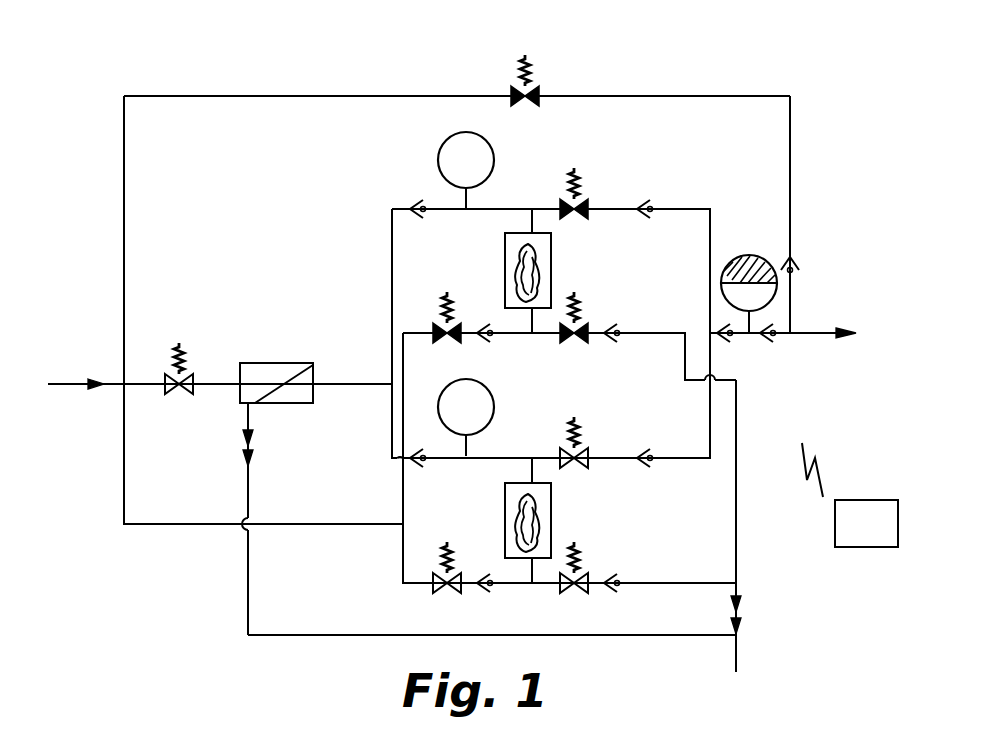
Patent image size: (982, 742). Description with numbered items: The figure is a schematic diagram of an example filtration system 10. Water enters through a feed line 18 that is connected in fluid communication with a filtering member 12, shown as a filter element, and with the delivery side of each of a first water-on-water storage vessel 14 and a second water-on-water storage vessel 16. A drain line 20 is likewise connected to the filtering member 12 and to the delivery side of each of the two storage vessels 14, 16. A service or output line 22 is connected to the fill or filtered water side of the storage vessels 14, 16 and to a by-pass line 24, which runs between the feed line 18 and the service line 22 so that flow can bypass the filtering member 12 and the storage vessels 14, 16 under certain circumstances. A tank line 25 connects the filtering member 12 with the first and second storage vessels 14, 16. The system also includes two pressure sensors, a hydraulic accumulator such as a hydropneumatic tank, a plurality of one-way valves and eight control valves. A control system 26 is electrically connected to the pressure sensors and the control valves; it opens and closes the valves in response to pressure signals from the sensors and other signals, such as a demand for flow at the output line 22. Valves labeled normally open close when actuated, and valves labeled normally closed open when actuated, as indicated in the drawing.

The filtration system 10 is at (84, 88).
The filtering member 12 is at (283, 403).
The first water-on-water storage vessel 14 is at (552, 252).
The second water-on-water storage vessel 16 is at (552, 502).
The feed line 18 is at (70, 382).
The drain line 20 is at (738, 595).
The service or output line 22 is at (812, 331).
The by-pass line 24 is at (208, 96).
The tank line 25 is at (392, 258).
The control system 26 is at (865, 500).